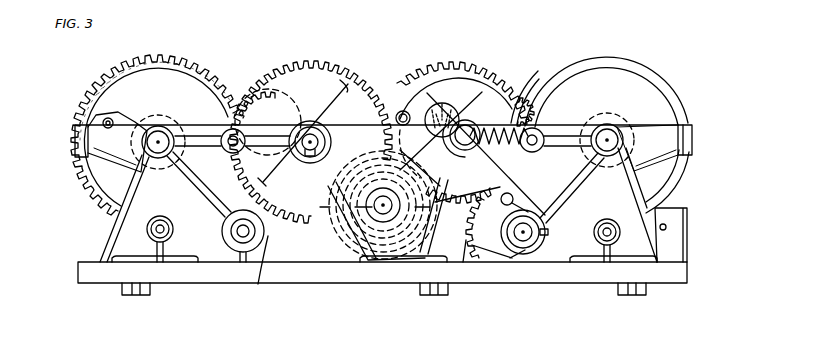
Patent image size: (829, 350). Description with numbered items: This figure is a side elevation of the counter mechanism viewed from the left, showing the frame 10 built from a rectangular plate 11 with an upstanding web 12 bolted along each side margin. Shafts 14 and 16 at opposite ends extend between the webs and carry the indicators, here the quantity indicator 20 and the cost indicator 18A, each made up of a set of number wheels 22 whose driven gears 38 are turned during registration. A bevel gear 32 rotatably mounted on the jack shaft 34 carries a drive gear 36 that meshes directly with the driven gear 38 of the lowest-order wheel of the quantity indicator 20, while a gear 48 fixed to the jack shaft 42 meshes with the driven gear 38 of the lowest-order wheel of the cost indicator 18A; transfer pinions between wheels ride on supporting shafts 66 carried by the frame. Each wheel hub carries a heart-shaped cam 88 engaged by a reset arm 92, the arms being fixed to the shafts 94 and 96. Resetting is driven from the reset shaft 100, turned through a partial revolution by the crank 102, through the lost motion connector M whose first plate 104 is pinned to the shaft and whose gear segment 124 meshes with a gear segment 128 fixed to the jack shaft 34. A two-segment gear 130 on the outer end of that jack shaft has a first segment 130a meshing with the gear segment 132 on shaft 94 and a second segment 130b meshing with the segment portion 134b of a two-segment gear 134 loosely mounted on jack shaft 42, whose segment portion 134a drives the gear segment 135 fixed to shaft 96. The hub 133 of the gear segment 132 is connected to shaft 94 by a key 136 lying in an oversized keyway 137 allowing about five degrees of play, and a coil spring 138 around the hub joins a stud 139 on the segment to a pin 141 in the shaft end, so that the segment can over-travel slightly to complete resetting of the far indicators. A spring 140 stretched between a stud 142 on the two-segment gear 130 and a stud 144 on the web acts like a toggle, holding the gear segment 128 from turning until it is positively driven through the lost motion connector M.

The frame 10 is at (90, 278).
The plate 11 is at (83, 270).
The upstanding web 12 is at (637, 193).
The shaft 14 is at (603, 122).
The shaft 16 is at (160, 135).
The cost indicator 18A is at (94, 91).
The quantity indicator 20 is at (672, 87).
The number wheel 22 is at (121, 70).
The bevel gear 32 is at (483, 60).
The jack shaft 34 is at (470, 118).
The drive gear 36 is at (492, 80).
The driven gear 38 is at (183, 70).
The jack shaft 42 is at (296, 160).
The gear 48 is at (280, 72).
The supporting shaft 66 is at (147, 230).
The heart-shaped cam 88 is at (133, 116).
The reset arm 92 is at (252, 92).
The shaft 94 is at (533, 253).
The shaft 96 is at (225, 228).
The reset shaft 100 is at (380, 202).
The crank 102 is at (455, 90).
The first plate 104 is at (345, 241).
The gear segment 124 is at (372, 166).
The gear segment 128 is at (372, 136).
The two-segment gear 130 is at (425, 85).
The first segment 130a is at (458, 187).
The second segment 130b is at (400, 100).
The gear segment 132 is at (465, 262).
The hub 133 is at (520, 258).
The two-segment gear 134 is at (322, 102).
The segment portion 134a is at (262, 172).
The segment portion 134b is at (347, 90).
The gear segment 135 is at (252, 268).
The key 136 is at (530, 225).
The keyway 137 is at (508, 230).
The coil spring 138 is at (512, 222).
The stud 139 is at (468, 208).
The spring 140 is at (533, 100).
The pin 141 is at (548, 235).
The stud 142 is at (407, 113).
The stud 144 is at (540, 132).
The lost motion connector M is at (343, 262).